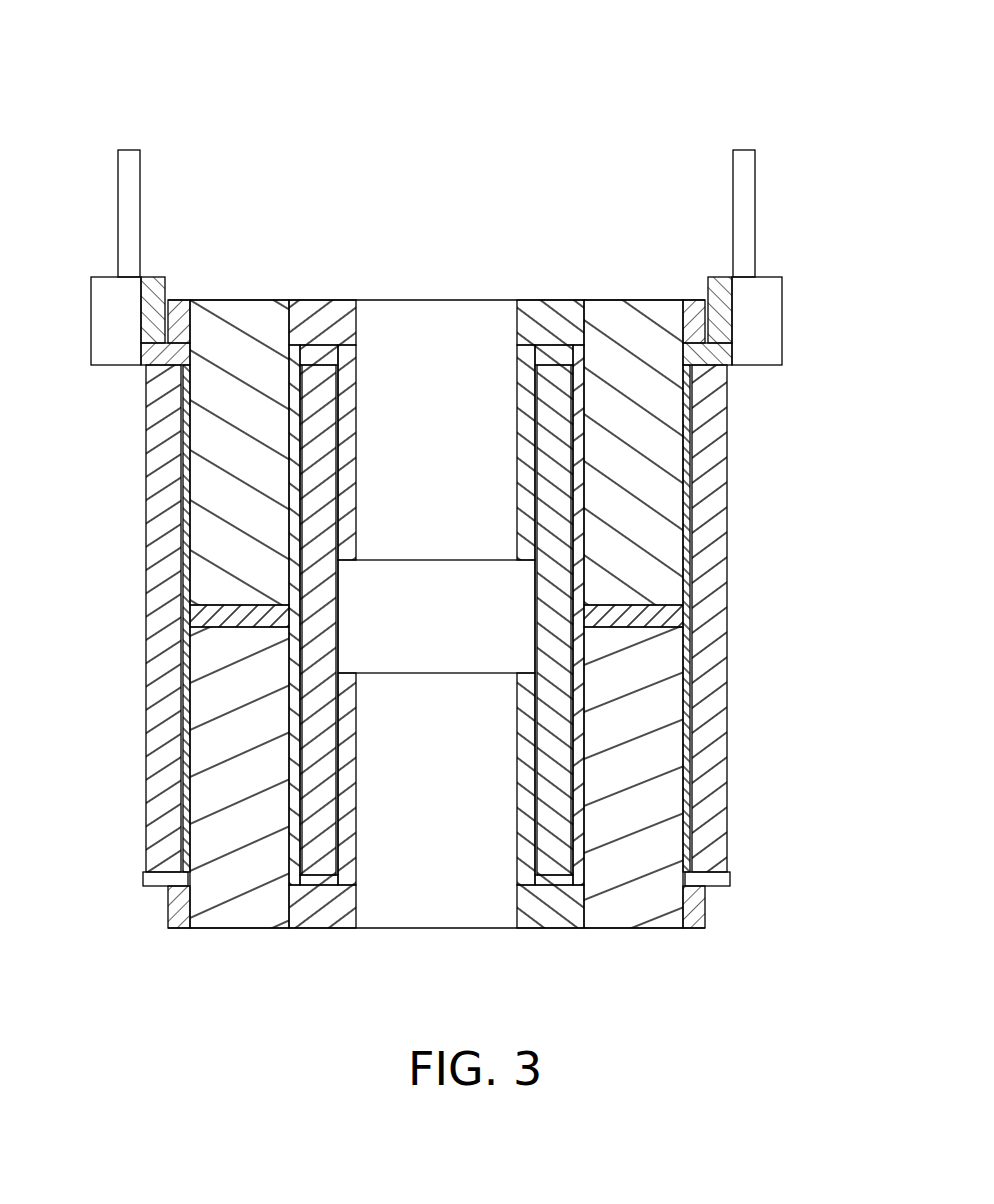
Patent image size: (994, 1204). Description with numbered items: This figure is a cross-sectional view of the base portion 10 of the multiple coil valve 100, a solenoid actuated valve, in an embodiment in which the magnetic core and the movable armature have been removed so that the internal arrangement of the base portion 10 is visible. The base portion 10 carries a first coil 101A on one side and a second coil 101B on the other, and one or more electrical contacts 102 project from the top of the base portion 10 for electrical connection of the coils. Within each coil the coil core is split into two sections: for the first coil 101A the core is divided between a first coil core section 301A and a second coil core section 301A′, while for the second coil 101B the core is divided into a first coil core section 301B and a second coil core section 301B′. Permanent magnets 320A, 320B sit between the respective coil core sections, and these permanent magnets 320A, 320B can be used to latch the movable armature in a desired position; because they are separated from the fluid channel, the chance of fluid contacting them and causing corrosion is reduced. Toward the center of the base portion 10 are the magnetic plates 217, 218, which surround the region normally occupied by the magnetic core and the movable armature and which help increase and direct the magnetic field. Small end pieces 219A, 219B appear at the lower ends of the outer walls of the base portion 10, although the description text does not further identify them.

The multiple coil valve 100 is at (708, 104).
The base portion 10 is at (740, 462).
The electrical contacts 102 is at (128, 173).
The first coil 101A is at (168, 497).
The second coil 101B is at (714, 574).
The magnetic plate 217 is at (317, 305).
The magnetic plate 218 is at (323, 928).
The first end seal 219A is at (160, 886).
The second end seal 219B is at (713, 886).
The first coil core section 301A is at (240, 305).
The second coil core section 301A′ is at (240, 915).
The first coil core section 301B is at (645, 315).
The second coil core section 301B′ is at (633, 915).
The permanent magnet 320A is at (215, 617).
The permanent magnet 320B is at (665, 612).